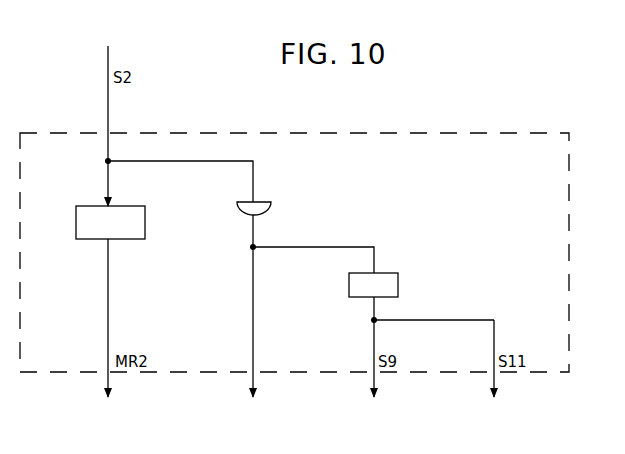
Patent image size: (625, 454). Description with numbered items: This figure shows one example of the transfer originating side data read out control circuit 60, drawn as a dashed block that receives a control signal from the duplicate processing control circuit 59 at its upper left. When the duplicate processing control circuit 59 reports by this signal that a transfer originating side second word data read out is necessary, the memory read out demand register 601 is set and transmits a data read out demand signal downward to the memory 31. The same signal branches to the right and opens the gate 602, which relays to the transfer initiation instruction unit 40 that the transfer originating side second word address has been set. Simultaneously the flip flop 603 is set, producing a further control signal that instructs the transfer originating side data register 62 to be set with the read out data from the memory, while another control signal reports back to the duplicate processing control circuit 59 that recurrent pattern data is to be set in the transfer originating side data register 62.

The transfer originating side data read out control circuit 60 is at (541, 133).
The duplicate processing control circuit 59 is at (303, 225).
The memory read out demand register 601 is at (117, 214).
The gate 602 is at (265, 200).
The flip flop 603 is at (381, 275).
The memory 31 is at (110, 331).
The transfer initiation instruction unit 40 is at (256, 319).
The transfer originating side data register 62 is at (376, 360).